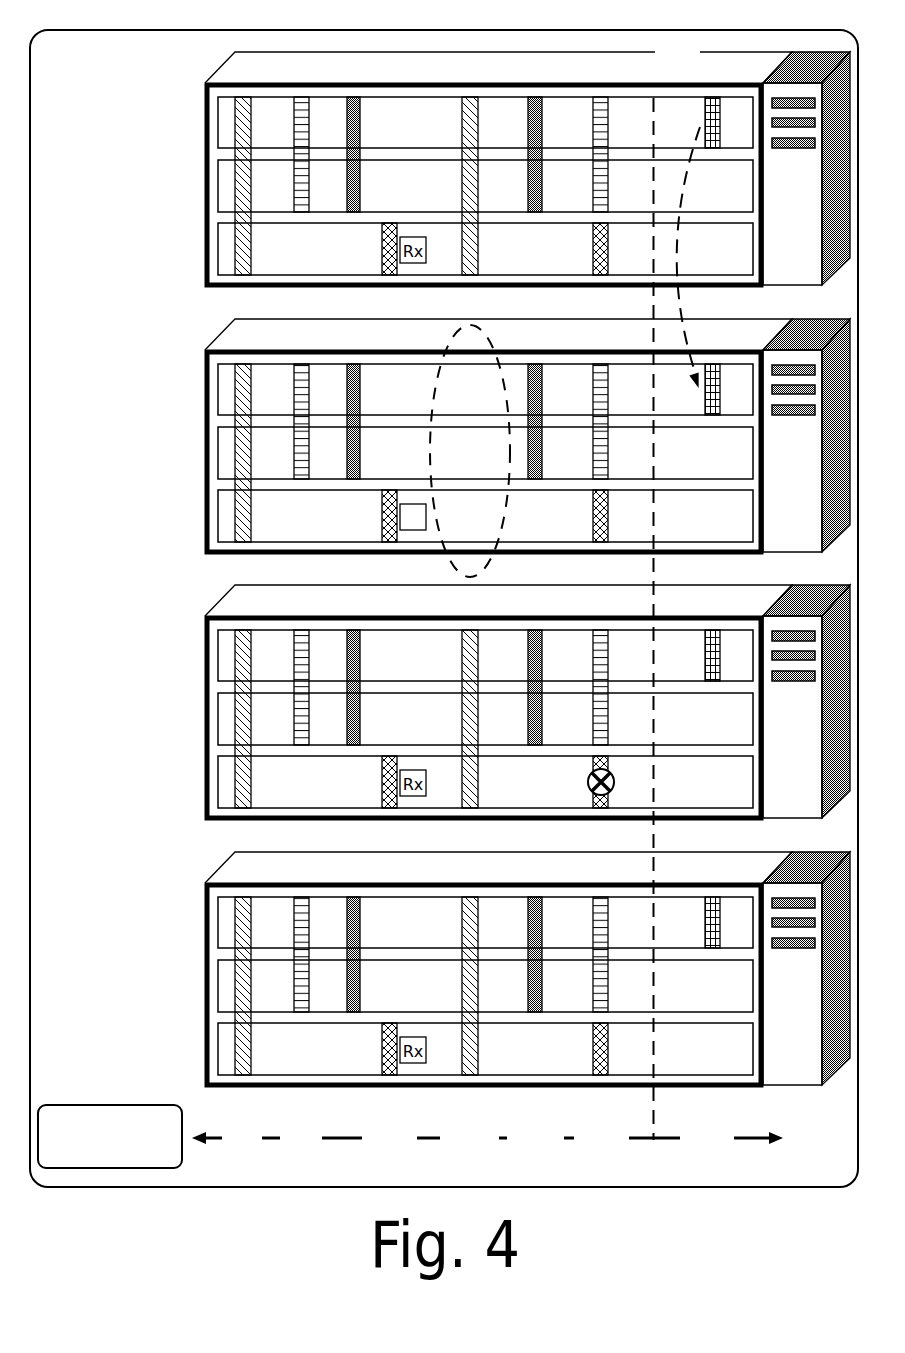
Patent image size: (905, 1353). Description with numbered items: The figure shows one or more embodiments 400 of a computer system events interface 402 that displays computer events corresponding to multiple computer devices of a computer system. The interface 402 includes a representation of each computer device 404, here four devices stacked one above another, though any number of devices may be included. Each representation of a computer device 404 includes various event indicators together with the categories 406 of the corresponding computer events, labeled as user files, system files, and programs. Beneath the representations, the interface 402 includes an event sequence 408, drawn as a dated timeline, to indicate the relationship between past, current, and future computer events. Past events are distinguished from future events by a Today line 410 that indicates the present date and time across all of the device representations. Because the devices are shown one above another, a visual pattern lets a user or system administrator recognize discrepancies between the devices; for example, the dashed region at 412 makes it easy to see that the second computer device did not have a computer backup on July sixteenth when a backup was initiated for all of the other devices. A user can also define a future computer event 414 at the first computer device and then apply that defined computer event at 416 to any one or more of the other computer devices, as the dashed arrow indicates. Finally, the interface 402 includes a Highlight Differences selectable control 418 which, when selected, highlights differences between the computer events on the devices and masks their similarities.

The embodiment of a computer system events interface 400 is at (577, 1200).
The computer system events interface 402 is at (120, 555).
The computer devices 404 is at (792, 584).
The categories 406 is at (152, 352).
The event sequence 408 is at (365, 1157).
The Today line 410 is at (655, 1044).
The missing computer backup indication 412 is at (470, 451).
The future computer event 414 is at (705, 118).
The applied computer event 416 is at (719, 368).
The Highlight Differences selectable control 418 is at (115, 1168).